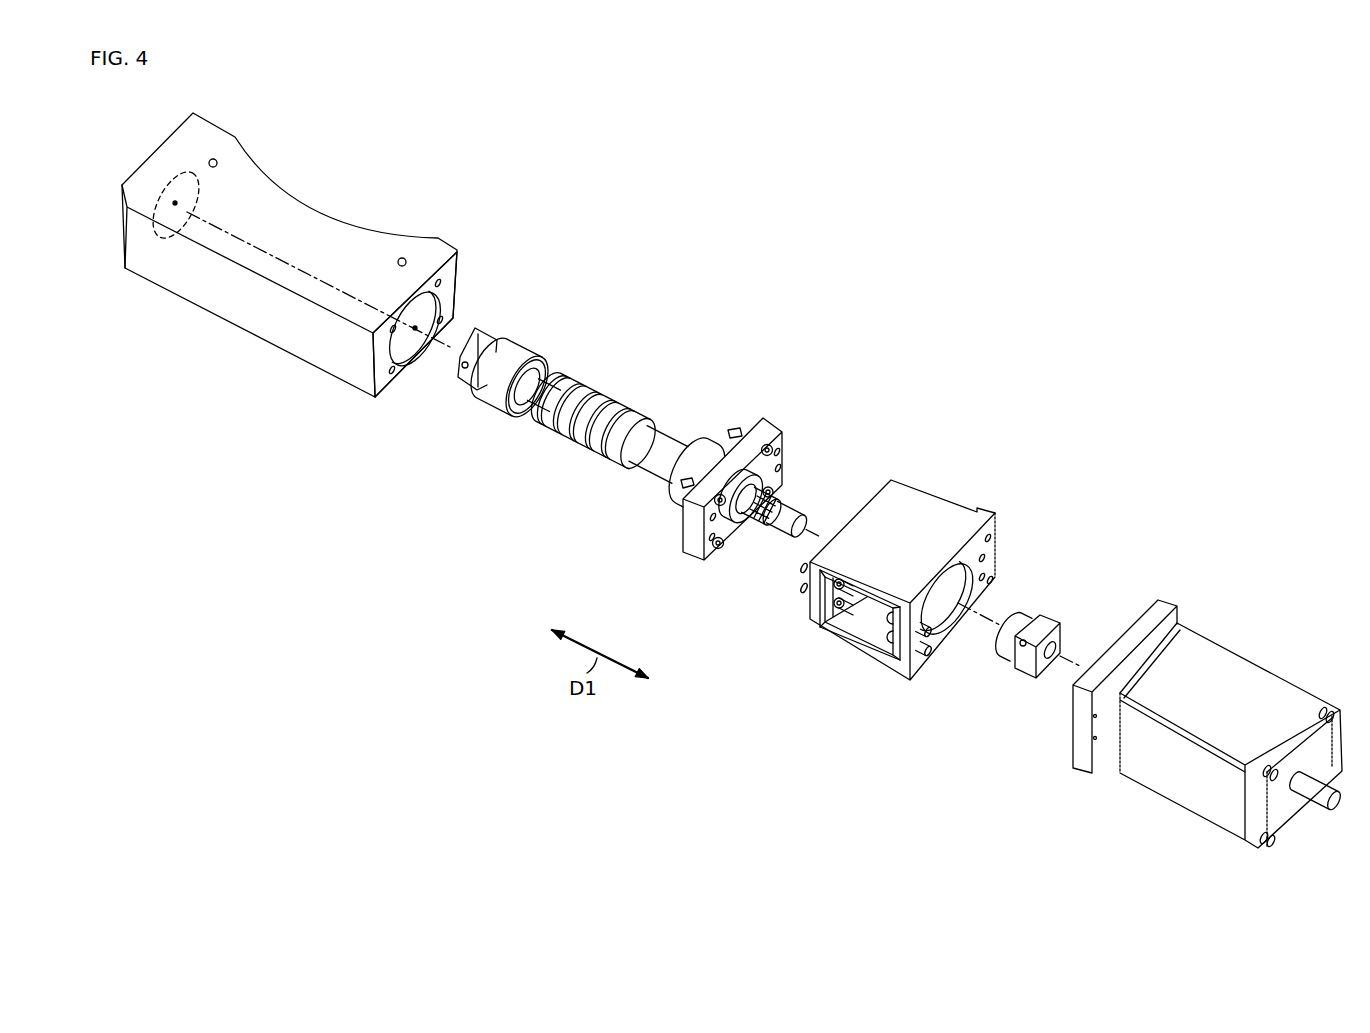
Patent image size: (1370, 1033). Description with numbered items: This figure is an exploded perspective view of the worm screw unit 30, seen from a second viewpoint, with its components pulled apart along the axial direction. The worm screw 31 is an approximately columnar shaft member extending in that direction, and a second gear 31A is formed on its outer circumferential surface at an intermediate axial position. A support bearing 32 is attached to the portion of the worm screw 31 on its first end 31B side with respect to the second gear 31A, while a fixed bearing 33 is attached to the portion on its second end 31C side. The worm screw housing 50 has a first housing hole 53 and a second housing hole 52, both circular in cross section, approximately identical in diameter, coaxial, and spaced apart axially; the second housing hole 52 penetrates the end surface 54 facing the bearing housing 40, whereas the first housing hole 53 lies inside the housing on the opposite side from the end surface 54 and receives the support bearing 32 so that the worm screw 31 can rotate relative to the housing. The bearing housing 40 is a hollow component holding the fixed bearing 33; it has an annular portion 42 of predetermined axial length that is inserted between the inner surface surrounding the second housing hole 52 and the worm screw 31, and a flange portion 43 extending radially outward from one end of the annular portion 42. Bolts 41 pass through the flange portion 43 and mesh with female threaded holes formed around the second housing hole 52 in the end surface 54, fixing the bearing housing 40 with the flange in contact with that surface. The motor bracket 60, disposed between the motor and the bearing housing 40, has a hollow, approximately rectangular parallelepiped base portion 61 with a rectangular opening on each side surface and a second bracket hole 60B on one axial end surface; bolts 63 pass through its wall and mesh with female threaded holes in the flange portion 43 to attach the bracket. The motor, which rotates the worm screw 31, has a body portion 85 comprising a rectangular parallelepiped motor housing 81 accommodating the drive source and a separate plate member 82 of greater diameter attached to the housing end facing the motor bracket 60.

The worm screw unit 30 is at (908, 295).
The worm screw 31 is at (639, 433).
The second gear 31A is at (583, 453).
The first end 31B is at (495, 357).
The second end 31C is at (783, 517).
The support bearing 32 is at (498, 398).
The fixed bearing 33 is at (740, 523).
The bearing housing 40 is at (711, 449).
The bolts 41 is at (684, 488).
The annular portion 42 is at (716, 440).
The flange portion 43 is at (767, 430).
The worm screw housing 50 is at (241, 312).
The second housing hole 52 is at (406, 359).
The first housing hole 53 is at (176, 202).
The end surface 54 is at (447, 296).
The motor bracket 60 is at (909, 551).
The second bracket hole 60B is at (957, 593).
The base portion 61 is at (940, 512).
The bolts 63 is at (828, 588).
The motor housing 81 is at (1222, 672).
The plate member 82 is at (1157, 607).
The body portion 85 is at (1208, 681).